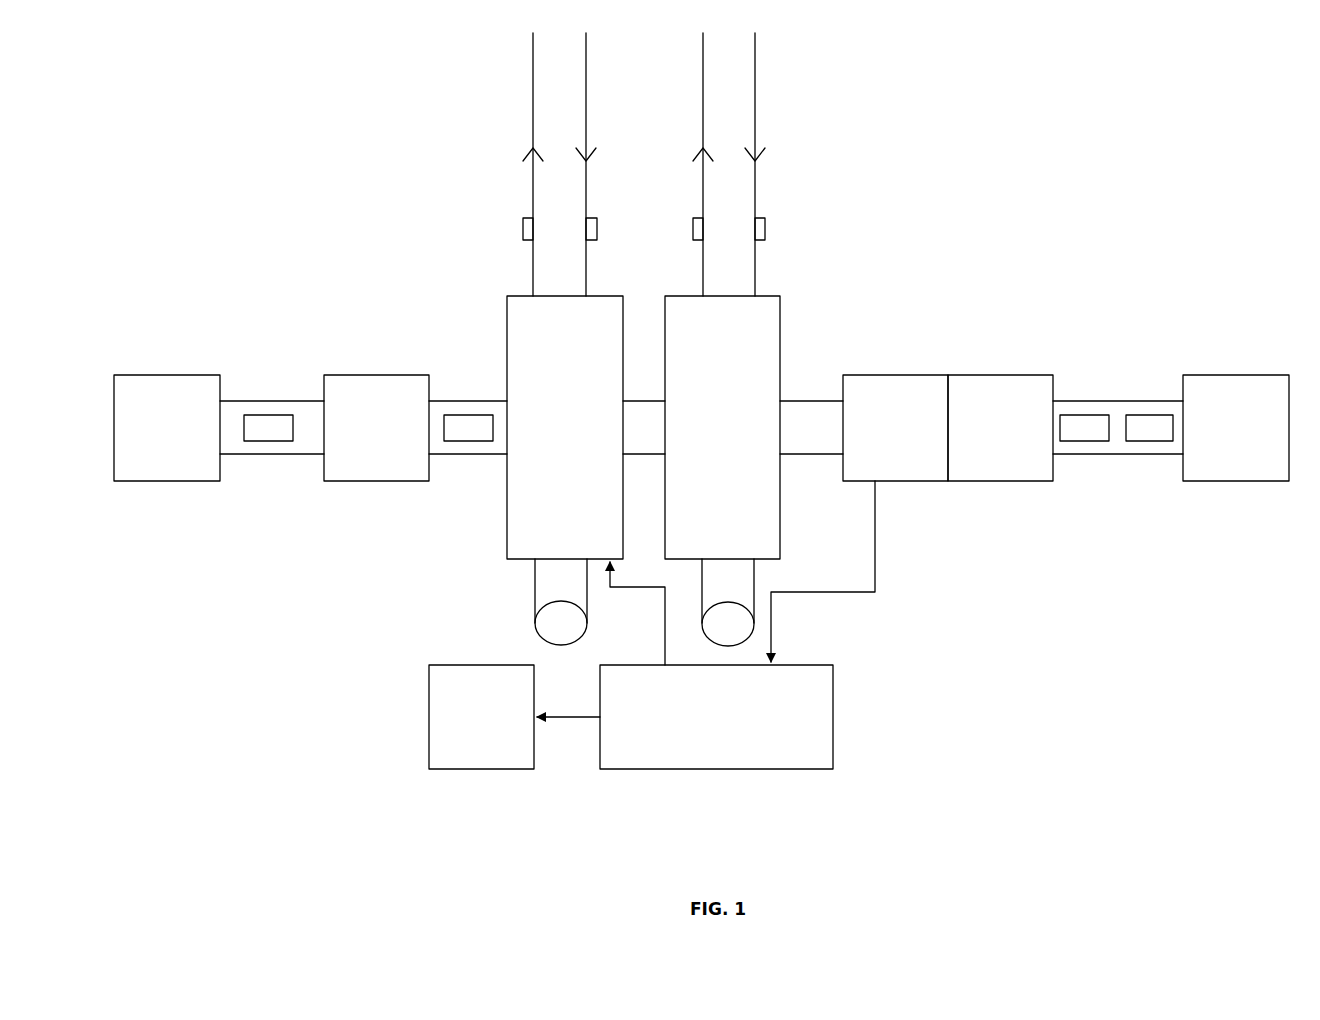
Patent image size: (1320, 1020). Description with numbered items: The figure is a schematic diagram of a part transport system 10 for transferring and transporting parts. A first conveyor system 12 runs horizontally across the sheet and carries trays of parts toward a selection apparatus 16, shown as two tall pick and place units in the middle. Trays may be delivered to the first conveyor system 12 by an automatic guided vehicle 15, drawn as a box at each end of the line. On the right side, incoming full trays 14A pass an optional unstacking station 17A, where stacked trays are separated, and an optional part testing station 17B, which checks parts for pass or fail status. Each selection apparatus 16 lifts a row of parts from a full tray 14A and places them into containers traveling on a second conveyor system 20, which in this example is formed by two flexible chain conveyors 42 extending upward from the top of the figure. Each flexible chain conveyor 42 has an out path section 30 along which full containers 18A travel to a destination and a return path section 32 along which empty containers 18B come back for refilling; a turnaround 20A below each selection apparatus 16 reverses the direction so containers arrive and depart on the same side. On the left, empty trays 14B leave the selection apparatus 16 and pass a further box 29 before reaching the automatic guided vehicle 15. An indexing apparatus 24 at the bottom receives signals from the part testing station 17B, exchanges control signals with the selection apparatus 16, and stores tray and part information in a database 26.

The part transport system 10 is at (1062, 150).
The first conveyor system 12 is at (1117, 305).
The full trays 14A is at (1150, 441).
The empty trays 14B is at (272, 441).
The automatic guided vehicle 15 is at (170, 375).
The selection apparatus 16 is at (507, 530).
The unstacking station 17A is at (999, 375).
The part testing station 17B is at (894, 375).
The full containers 18A is at (523, 228).
The empty containers 18B is at (597, 232).
The second conveyor system 20 is at (366, 174).
The turnaround 20A is at (535, 614).
The indexing apparatus 24 is at (833, 712).
The database 26 is at (429, 700).
The component 29 is at (376, 375).
The out path section 30 is at (533, 120).
The return path section 32 is at (586, 120).
The flexible chain conveyor 42 is at (793, 53).